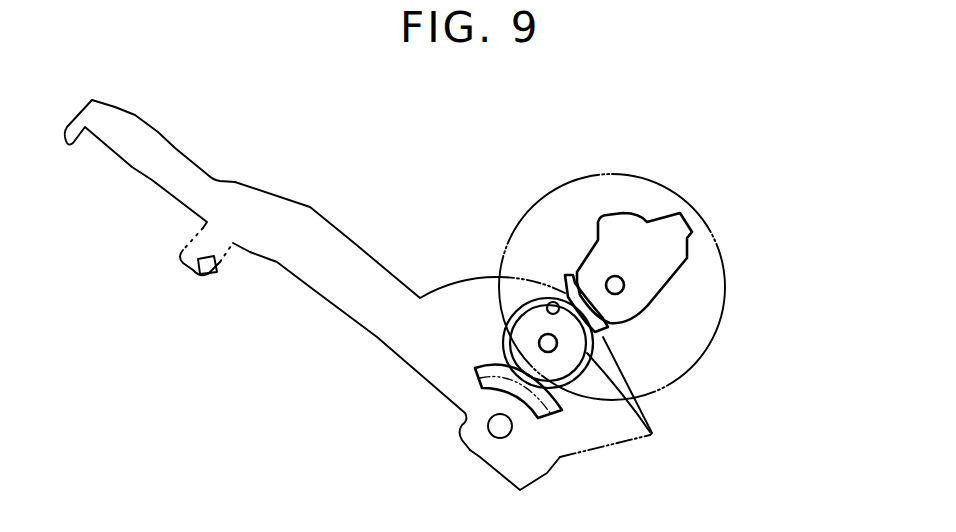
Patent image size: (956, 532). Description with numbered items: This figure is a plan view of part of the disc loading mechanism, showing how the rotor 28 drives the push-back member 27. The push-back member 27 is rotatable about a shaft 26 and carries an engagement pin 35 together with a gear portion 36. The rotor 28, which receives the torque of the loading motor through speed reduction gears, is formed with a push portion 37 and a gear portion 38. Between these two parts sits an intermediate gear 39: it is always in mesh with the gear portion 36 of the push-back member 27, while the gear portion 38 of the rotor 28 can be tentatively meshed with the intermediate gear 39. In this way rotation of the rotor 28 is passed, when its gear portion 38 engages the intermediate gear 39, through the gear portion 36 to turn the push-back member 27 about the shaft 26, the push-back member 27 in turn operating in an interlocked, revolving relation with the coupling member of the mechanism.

The shaft 26 is at (488, 426).
The push-back member 27 is at (295, 280).
The rotor 28 is at (720, 242).
The engagement pin 35 is at (547, 303).
The gear portion 36 is at (563, 413).
The push portion 37 is at (600, 242).
The gear portion 38 is at (617, 333).
The intermediate gear 39 is at (652, 433).